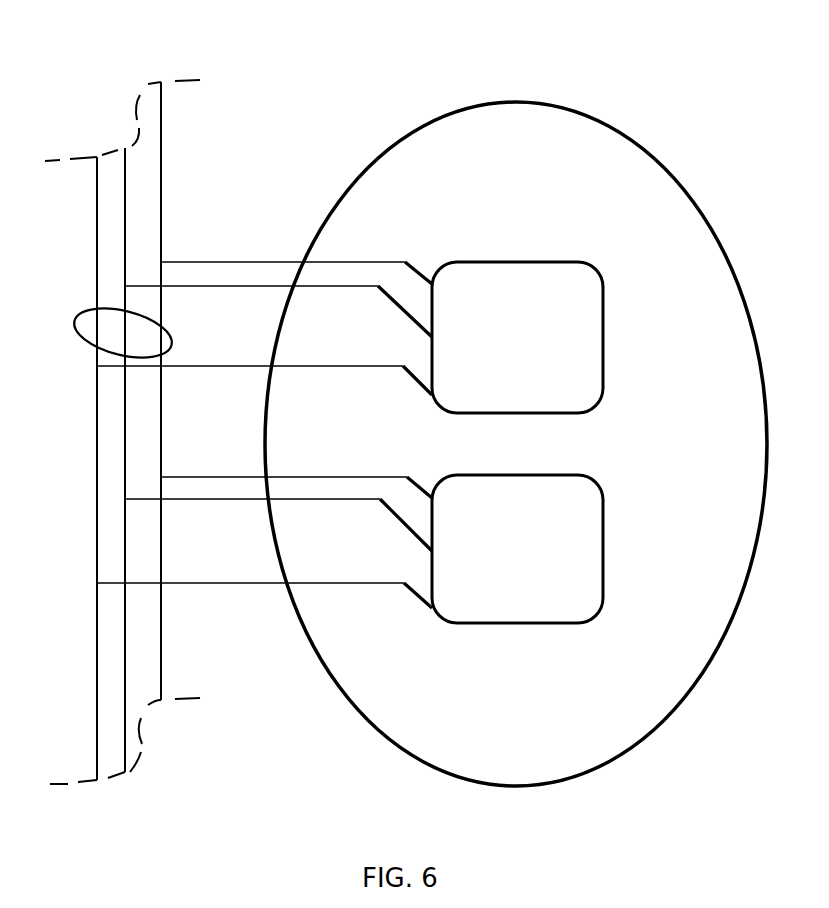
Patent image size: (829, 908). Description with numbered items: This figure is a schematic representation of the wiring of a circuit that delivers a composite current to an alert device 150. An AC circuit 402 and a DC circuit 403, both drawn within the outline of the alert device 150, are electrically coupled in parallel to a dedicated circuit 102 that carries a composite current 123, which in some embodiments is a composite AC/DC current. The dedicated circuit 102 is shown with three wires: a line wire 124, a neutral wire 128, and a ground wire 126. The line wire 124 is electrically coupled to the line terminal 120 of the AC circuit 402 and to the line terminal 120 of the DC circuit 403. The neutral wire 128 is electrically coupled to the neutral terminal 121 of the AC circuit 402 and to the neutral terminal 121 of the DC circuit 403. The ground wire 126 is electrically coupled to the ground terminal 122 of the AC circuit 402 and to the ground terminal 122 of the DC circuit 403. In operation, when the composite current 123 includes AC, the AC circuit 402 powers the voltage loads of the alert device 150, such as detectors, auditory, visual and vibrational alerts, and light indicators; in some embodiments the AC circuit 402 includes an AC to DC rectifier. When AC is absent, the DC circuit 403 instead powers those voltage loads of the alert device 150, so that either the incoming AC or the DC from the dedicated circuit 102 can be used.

The dedicated circuit 102 is at (217, 118).
The line terminal 120 is at (392, 304).
The neutral terminal 121 is at (421, 262).
The ground terminal 122 is at (415, 384).
The composite current 123 is at (90, 311).
The line wire 124 is at (125, 150).
The ground wire 126 is at (97, 681).
The neutral wire 128 is at (161, 181).
The alert device 150 is at (640, 141).
The AC circuit 402 is at (517, 337).
The DC circuit 403 is at (517, 549).